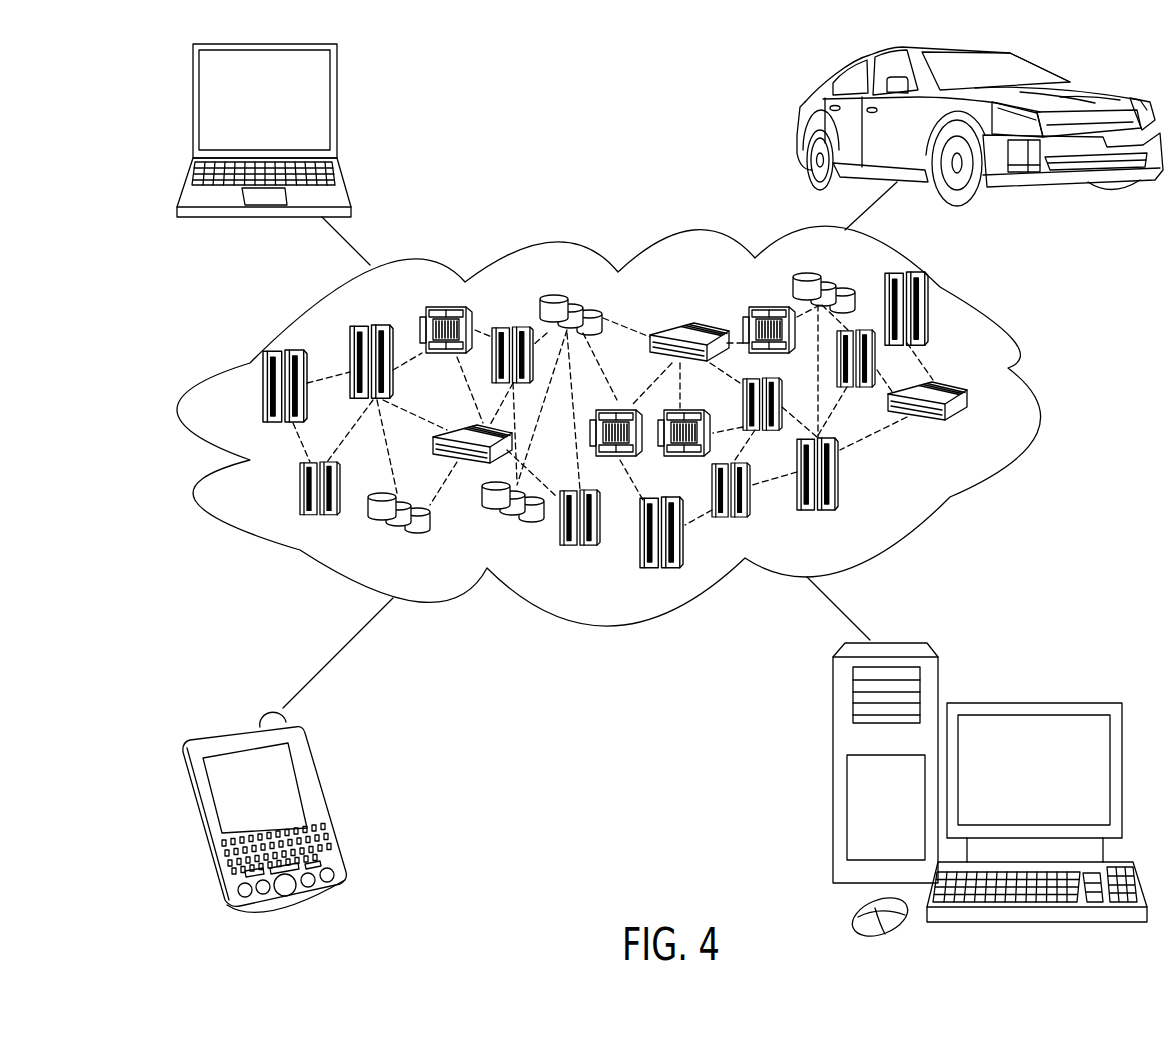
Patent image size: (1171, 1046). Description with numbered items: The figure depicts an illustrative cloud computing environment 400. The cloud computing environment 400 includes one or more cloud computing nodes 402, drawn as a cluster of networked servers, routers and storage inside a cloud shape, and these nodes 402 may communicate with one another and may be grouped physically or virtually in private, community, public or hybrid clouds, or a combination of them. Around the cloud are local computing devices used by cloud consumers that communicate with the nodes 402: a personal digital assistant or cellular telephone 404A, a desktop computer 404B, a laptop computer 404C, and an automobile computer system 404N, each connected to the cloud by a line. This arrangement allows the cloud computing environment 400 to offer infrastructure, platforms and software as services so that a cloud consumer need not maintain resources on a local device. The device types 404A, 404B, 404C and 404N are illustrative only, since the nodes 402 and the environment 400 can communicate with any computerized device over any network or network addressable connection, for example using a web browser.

The cloud computing environment 400 is at (1033, 395).
The cloud computing nodes 402 is at (973, 430).
The personal digital assistant (PDA) or cellular telephone 404A is at (325, 800).
The desktop computer 404B is at (1030, 703).
The laptop computer 404C is at (337, 108).
The automobile computer system 404N is at (800, 125).